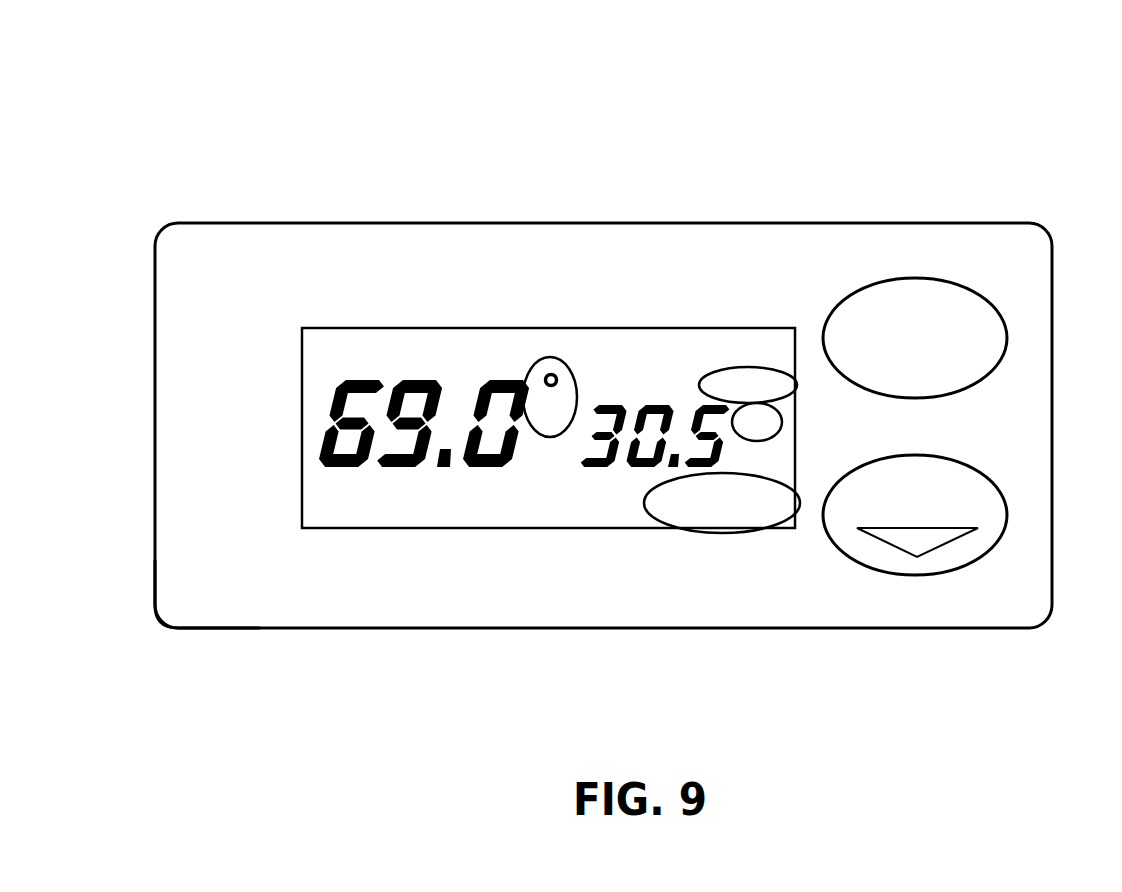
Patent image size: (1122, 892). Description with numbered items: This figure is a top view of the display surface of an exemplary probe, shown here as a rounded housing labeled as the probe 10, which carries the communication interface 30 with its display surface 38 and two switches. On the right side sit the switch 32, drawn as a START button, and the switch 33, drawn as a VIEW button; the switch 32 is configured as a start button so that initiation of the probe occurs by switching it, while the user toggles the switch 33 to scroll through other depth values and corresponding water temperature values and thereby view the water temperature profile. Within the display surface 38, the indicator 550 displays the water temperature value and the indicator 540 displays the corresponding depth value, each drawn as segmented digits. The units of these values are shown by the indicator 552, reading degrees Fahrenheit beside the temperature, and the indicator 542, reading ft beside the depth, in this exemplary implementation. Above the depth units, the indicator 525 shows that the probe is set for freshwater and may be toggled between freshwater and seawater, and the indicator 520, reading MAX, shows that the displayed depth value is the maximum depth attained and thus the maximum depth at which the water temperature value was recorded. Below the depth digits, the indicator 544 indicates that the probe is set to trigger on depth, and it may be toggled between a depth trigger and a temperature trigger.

The depth measuring device 10 is at (952, 132).
The communication interface 30 is at (193, 333).
The switch 32 is at (902, 280).
The switch 33 is at (967, 462).
The display surface 38 is at (210, 578).
The indicator 520 is at (700, 382).
The indicator 525 is at (708, 342).
The indicator 540 is at (617, 480).
The indicator 542 is at (775, 437).
The indicator 544 is at (705, 532).
The indicator 550 is at (393, 483).
The indicator 552 is at (533, 375).